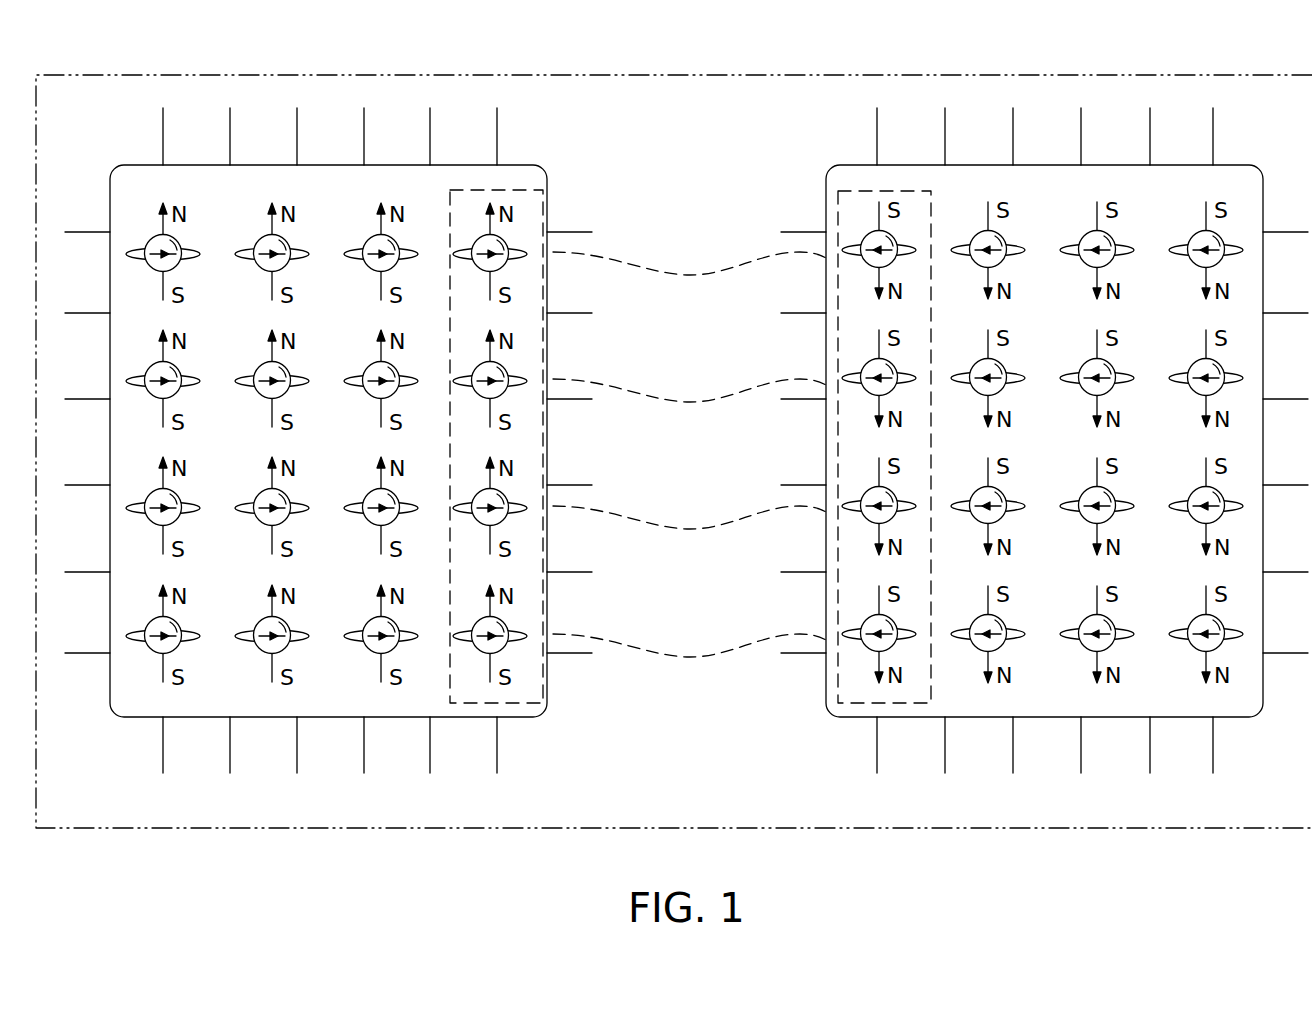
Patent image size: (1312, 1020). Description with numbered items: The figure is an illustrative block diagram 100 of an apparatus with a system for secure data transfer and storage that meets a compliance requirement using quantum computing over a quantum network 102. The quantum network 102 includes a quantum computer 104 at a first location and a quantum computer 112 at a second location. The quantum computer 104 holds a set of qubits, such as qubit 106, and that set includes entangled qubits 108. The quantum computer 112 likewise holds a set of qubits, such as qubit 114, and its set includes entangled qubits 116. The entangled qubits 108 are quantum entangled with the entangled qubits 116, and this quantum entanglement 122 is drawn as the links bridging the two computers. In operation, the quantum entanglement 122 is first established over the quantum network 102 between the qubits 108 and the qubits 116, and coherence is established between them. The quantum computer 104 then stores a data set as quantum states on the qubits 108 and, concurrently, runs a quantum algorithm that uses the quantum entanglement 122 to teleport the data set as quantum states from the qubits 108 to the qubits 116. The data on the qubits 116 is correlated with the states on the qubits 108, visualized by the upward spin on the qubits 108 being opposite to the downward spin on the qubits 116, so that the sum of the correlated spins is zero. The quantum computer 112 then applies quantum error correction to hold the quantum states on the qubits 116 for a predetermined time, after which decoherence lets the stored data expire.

The illustrative block diagram 100 is at (143, 34).
The quantum network 102 is at (659, 74).
The quantum computer 104 is at (122, 718).
The qubit 106 is at (148, 240).
The entangled qubits 108 is at (550, 210).
The quantum computer 112 is at (836, 718).
The qubit 114 is at (1222, 244).
The entangled qubits 116 is at (839, 205).
The quantum entanglement 122 is at (694, 276).